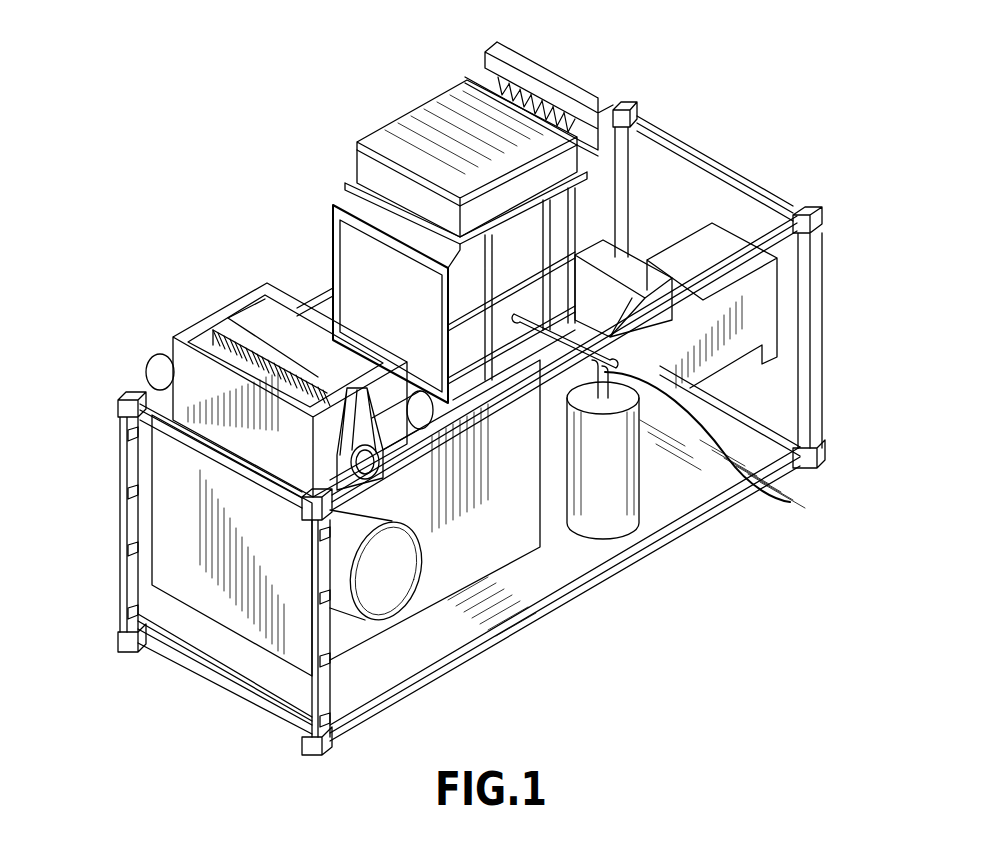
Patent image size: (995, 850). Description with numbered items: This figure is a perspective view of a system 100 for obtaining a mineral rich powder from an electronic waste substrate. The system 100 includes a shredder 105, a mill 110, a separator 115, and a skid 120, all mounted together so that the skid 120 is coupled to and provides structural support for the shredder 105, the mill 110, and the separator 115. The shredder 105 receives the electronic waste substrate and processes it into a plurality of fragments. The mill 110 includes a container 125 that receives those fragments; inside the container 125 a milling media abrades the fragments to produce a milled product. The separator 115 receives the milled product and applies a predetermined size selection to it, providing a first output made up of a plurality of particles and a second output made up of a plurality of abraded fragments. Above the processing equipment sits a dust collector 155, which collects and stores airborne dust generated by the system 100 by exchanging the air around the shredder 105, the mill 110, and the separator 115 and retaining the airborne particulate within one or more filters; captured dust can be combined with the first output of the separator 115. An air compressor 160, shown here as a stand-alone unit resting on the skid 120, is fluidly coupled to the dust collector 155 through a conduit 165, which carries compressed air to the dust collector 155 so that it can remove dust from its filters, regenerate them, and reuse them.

The system 100 is at (235, 120).
The shredder 105 is at (203, 318).
The mill 110 is at (150, 475).
The separator 115 is at (728, 228).
The skid 120 is at (822, 330).
The container 125 is at (397, 583).
The dust collector 155 is at (420, 108).
The air compressor 160 is at (627, 498).
The conduit 165 is at (790, 502).